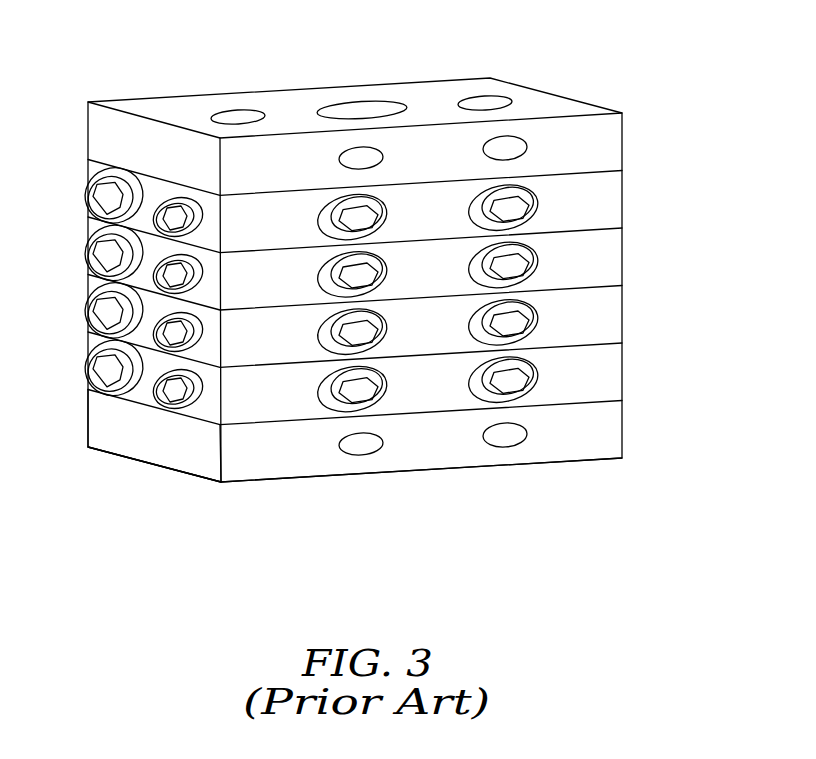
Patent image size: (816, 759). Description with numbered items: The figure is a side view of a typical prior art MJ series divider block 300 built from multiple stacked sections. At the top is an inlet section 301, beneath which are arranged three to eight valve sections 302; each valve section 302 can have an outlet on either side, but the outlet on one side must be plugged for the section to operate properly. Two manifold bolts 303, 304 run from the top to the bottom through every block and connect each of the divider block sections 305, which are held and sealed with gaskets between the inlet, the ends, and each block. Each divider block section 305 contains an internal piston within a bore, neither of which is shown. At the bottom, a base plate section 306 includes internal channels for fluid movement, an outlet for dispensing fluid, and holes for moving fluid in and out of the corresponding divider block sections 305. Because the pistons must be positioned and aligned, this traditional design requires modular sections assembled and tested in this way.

The MJ series divider block 300 is at (394, 280).
The inlet section 301 is at (355, 94).
The valve section 302 is at (134, 426).
The manifold bolt 303 is at (229, 100).
The manifold bolt 304 is at (481, 93).
The divider block section 305 is at (598, 257).
The base plate section 306 is at (424, 450).